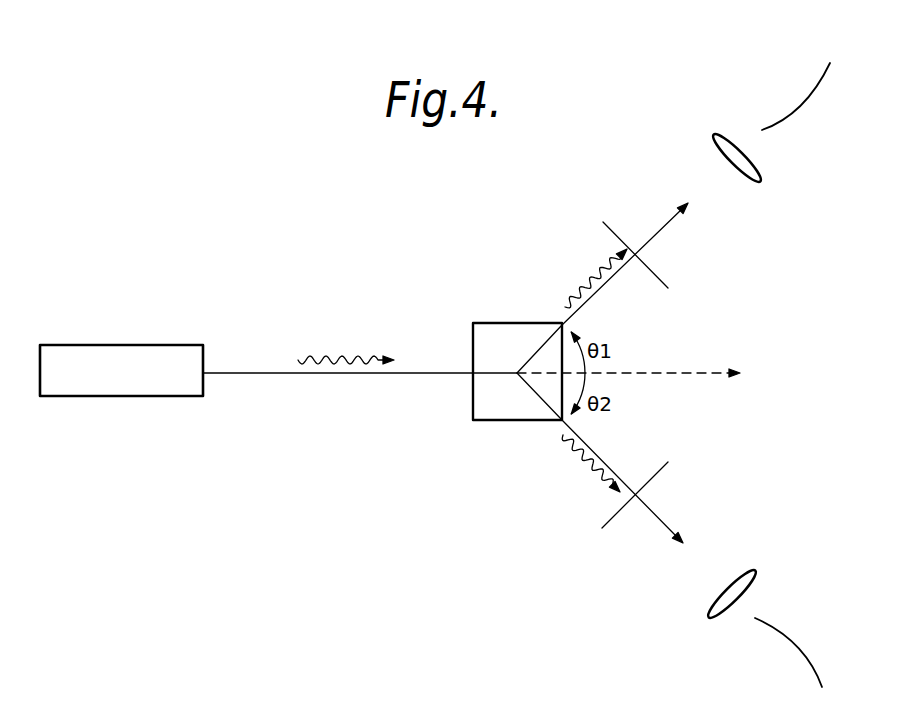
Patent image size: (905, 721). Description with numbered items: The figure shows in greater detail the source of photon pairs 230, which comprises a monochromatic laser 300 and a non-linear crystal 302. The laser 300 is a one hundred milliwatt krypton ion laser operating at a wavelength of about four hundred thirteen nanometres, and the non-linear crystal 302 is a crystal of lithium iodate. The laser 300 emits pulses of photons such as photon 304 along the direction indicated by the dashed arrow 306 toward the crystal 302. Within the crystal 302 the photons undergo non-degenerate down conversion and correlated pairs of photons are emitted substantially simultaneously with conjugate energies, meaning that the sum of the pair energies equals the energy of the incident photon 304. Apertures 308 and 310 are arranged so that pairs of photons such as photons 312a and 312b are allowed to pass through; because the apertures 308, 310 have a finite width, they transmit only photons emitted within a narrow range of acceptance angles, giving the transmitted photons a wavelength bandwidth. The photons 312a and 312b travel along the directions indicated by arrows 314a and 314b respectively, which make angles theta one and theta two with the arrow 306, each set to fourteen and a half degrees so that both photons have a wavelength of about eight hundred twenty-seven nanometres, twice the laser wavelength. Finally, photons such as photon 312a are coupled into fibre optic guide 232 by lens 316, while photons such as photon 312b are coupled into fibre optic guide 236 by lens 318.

The source of photon pairs 230 is at (253, 312).
The fibre optic guide 232 is at (796, 110).
The fibre optic guide 236 is at (788, 642).
The monochromatic laser 300 is at (186, 397).
The non-linear crystal 302 is at (497, 423).
The photon 304 is at (344, 353).
The dashed arrow 306 is at (628, 399).
The aperture 308 is at (660, 277).
The aperture 310 is at (645, 486).
The photon 312a is at (578, 291).
The photon 312b is at (592, 476).
The arrow 314a is at (672, 221).
The arrow 314b is at (662, 523).
The lens 316 is at (718, 150).
The lens 318 is at (745, 594).